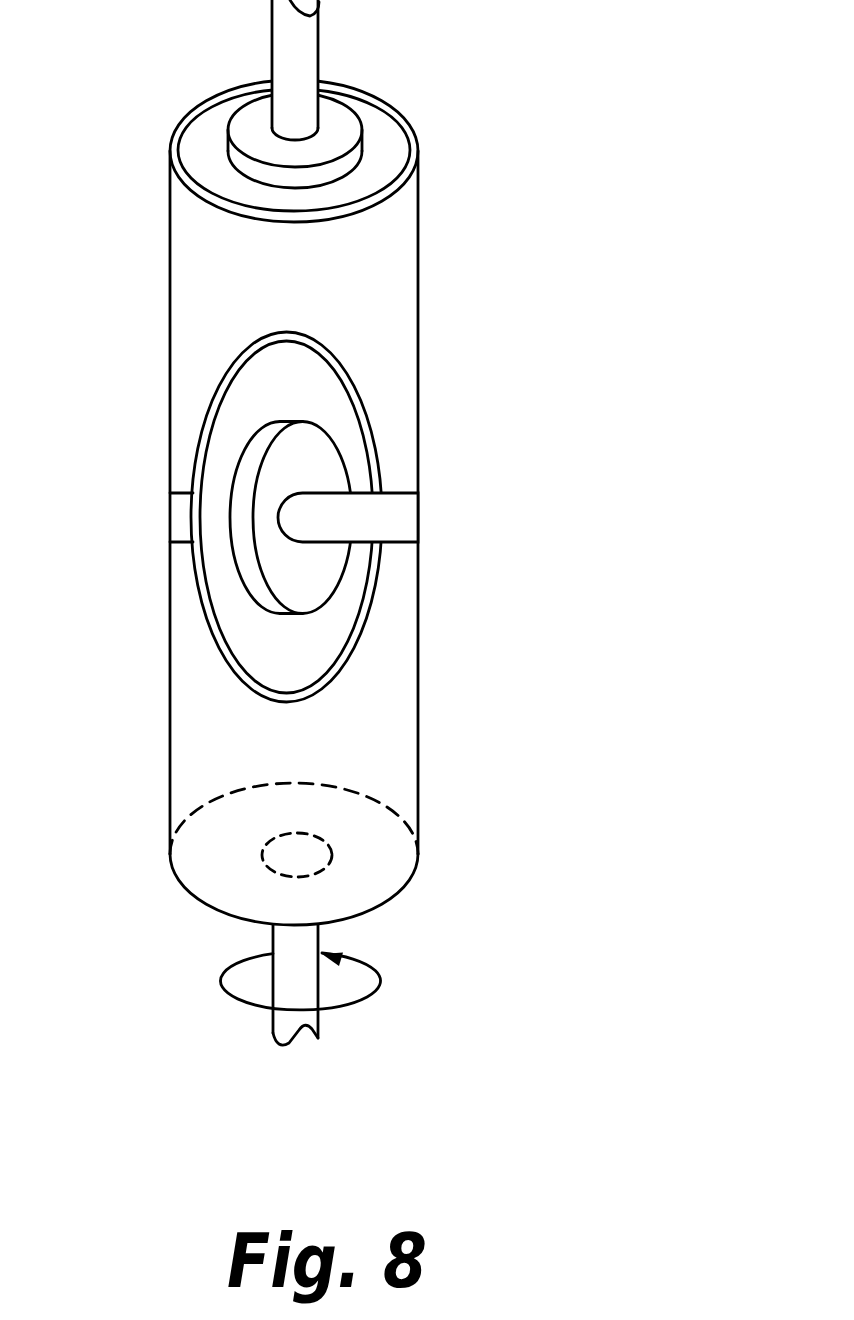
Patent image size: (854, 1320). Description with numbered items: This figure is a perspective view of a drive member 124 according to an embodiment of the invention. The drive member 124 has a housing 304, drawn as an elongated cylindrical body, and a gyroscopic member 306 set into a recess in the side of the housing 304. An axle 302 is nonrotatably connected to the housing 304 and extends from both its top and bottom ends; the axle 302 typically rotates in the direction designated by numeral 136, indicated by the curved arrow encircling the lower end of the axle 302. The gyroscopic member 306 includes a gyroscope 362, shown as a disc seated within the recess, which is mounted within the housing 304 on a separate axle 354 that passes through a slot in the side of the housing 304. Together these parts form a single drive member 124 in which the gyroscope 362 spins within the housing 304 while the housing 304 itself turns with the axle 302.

The drive member 124 is at (375, 535).
The axle 302 is at (320, 53).
The housing 304 is at (418, 659).
The gyroscopic member 306 is at (395, 466).
The axle 354 is at (388, 520).
The gyroscope 362 is at (305, 580).
The direction of rotation 136 is at (220, 981).